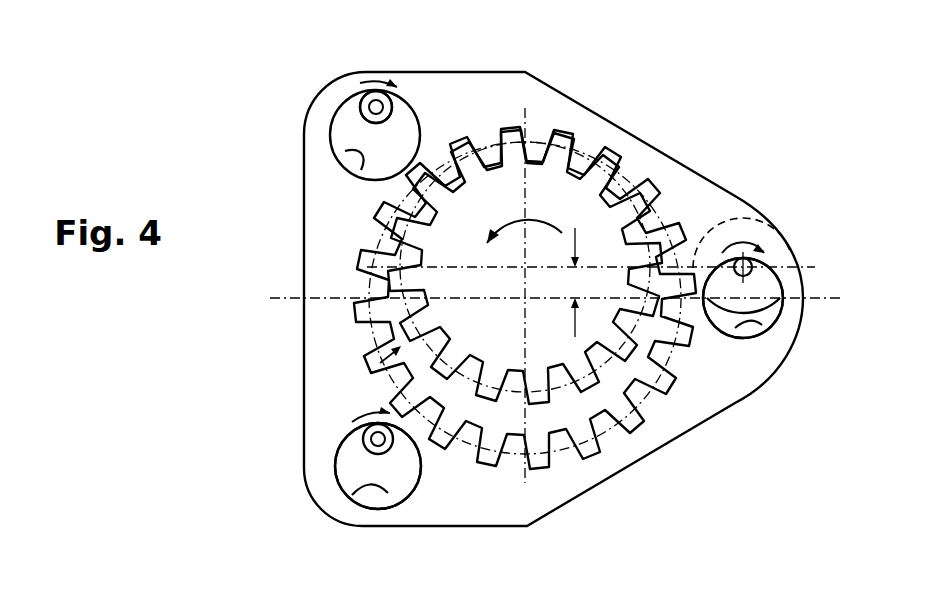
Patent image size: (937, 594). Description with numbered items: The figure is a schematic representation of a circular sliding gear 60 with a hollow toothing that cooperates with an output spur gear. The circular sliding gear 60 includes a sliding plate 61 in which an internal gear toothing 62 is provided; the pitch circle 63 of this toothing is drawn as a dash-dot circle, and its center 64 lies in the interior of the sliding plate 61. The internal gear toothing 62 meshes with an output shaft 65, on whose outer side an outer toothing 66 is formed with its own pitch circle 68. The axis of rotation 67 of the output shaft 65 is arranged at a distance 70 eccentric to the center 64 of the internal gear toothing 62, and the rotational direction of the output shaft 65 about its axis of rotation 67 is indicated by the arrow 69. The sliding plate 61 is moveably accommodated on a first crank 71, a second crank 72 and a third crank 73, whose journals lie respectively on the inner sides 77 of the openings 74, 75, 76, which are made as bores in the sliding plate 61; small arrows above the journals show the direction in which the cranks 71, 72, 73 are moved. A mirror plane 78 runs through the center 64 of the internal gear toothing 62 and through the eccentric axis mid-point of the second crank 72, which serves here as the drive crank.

The circular sliding gear 60 is at (670, 98).
The sliding plate 61 is at (573, 116).
The internal gear toothing 62 is at (676, 212).
The pitch circle of the internal gear toothing 63 is at (675, 355).
The center of the internal gear toothing 64 is at (522, 300).
The output shaft 65 is at (560, 353).
The outer toothing 66 is at (378, 362).
The axis of rotation 67 is at (525, 267).
The pitch circle of the outer toothing 68 is at (345, 314).
The arrow 69 is at (539, 216).
The distance 70 is at (578, 283).
The first crank 71 is at (395, 111).
The second crank 72 is at (766, 282).
The third crank 73 is at (360, 448).
The opening 74 is at (410, 112).
The opening 75 is at (782, 318).
The opening 76 is at (413, 494).
The inner side 77 is at (347, 151).
The mirror plane 78 is at (282, 296).